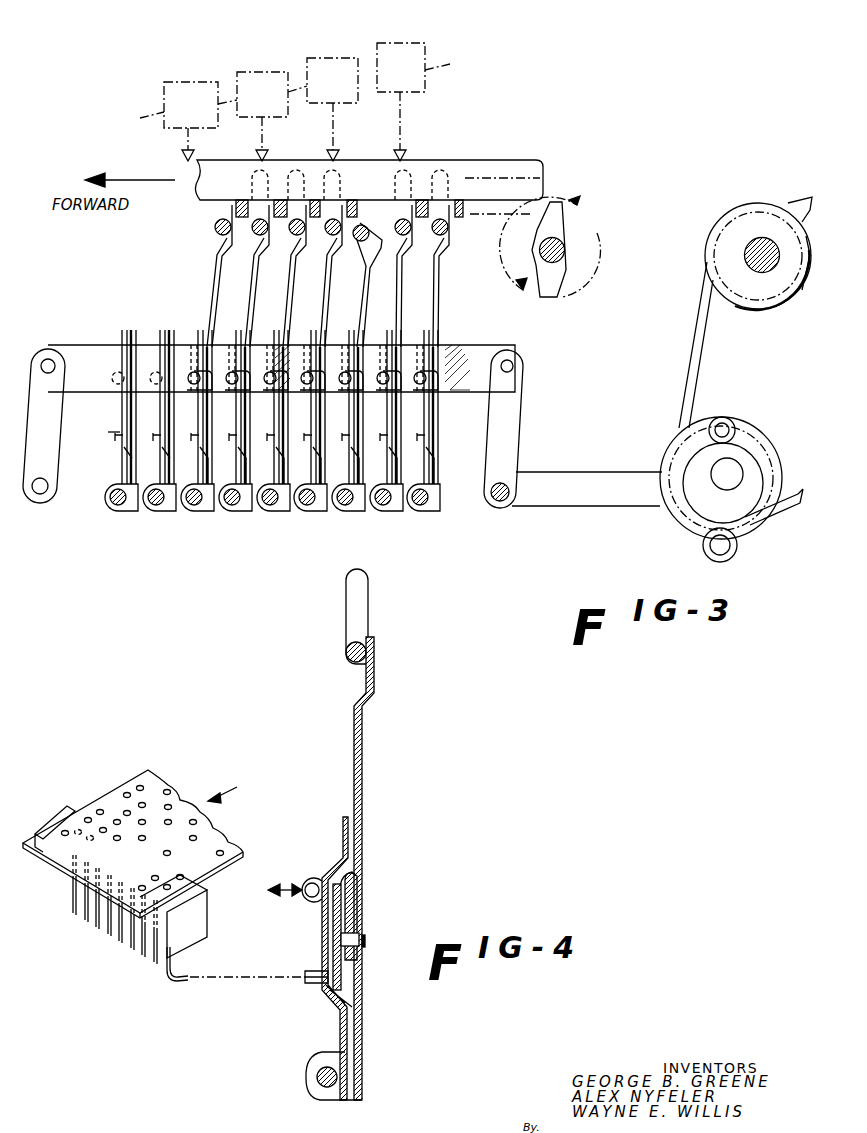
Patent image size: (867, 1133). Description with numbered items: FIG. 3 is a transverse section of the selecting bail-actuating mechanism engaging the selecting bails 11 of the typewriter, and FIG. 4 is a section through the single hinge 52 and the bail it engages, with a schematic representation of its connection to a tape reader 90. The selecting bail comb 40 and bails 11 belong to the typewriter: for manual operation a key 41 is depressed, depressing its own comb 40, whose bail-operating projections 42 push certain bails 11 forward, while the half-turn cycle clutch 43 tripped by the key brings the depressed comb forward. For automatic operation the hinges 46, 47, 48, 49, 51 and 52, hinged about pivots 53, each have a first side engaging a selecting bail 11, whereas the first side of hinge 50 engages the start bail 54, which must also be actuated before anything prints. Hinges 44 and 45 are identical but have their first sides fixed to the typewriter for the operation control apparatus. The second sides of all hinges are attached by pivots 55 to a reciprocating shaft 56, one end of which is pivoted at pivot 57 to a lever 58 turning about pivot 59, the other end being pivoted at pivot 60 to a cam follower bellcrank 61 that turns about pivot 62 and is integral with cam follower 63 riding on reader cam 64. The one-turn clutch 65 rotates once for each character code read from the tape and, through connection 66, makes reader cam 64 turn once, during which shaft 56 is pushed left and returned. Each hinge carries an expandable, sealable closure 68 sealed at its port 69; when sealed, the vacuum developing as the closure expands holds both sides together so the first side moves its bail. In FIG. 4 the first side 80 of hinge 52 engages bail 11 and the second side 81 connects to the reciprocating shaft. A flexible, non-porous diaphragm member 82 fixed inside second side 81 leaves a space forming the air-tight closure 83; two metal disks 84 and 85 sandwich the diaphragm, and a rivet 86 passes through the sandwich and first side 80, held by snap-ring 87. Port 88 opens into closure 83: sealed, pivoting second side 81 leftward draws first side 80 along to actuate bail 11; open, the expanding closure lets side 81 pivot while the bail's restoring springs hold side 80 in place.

In FIG. 3, the selecting bail 11 is at (253, 243).
In FIG. 4, the selecting bail 11 is at (362, 624).
In FIG. 3, the selecting bail comb 40 is at (518, 144).
In FIG. 3, the key 41 is at (306, 60).
In FIG. 3, the bail-operating projection 42 is at (425, 216).
In FIG. 3, the half-turn cycle clutch 43 is at (563, 243).
In FIG. 3, the hinge 44 is at (123, 512).
In FIG. 3, the hinge 45 is at (178, 507).
In FIG. 3, the hinge 46 is at (204, 508).
In FIG. 3, the hinge 47 is at (238, 513).
In FIG. 3, the hinge 48 is at (265, 508).
In FIG. 3, the hinge 49 is at (307, 511).
In FIG. 3, the hinge 50 is at (345, 509).
In FIG. 3, the hinge 51 is at (381, 509).
In FIG. 3, the hinge 52 is at (422, 509).
In FIG. 4, the hinge 52 is at (364, 1047).
In FIG. 3, the pivot 53 is at (113, 506).
In FIG. 4, the pivot 53 is at (318, 1073).
In FIG. 3, the start bail 54 is at (363, 243).
In FIG. 3, the pivot 55 is at (192, 372).
In FIG. 4, the pivot 55 is at (315, 880).
In FIG. 3, the reciprocating shaft 56 is at (105, 352).
In FIG. 3, the pivot 57 is at (52, 360).
In FIG. 3, the lever 58 is at (58, 422).
In FIG. 3, the pivot 59 is at (40, 500).
In FIG. 3, the pivot 60 is at (510, 365).
In FIG. 3, the cam follower bellcrank 61 is at (505, 425).
In FIG. 3, the pivot 62 is at (498, 503).
In FIG. 3, the cam follower 63 is at (692, 533).
In FIG. 3, the reader cam 64 is at (750, 463).
In FIG. 3, the one-turn clutch 65 is at (752, 308).
In FIG. 3, the belt 66 is at (692, 369).
In FIG. 3, the expandable sealable closure 68 is at (163, 447).
In FIG. 3, the port 69 is at (112, 434).
In FIG. 4, the first side 80 is at (363, 803).
In FIG. 4, the second side 81 is at (342, 822).
In FIG. 4, the diaphragm member 82 is at (343, 882).
In FIG. 4, the closure 83 is at (332, 983).
In FIG. 4, the metal disk 84 is at (335, 922).
In FIG. 4, the metal disk 85 is at (357, 917).
In FIG. 4, the rivet 86 is at (362, 940).
In FIG. 4, the snap-ring 87 is at (360, 929).
In FIG. 4, the port 88 is at (310, 968).
In FIG. 4, the circuit board 90 is at (80, 776).